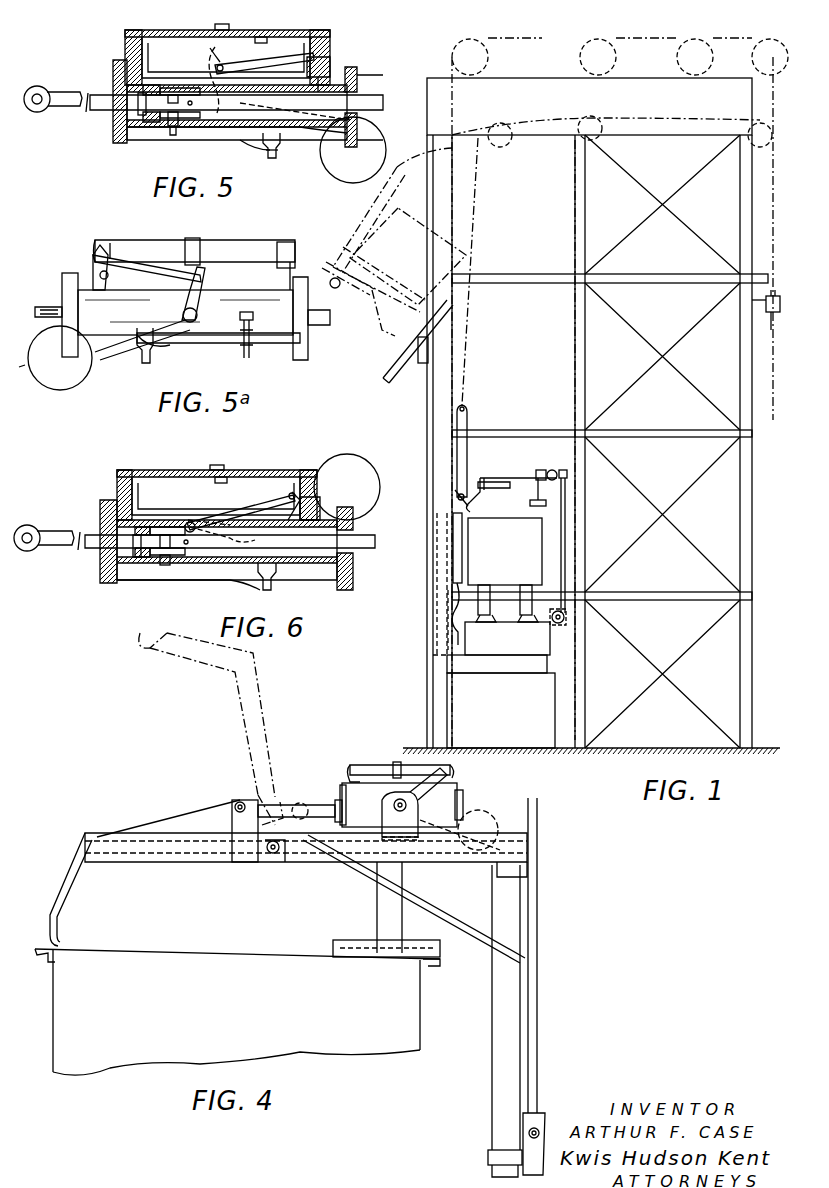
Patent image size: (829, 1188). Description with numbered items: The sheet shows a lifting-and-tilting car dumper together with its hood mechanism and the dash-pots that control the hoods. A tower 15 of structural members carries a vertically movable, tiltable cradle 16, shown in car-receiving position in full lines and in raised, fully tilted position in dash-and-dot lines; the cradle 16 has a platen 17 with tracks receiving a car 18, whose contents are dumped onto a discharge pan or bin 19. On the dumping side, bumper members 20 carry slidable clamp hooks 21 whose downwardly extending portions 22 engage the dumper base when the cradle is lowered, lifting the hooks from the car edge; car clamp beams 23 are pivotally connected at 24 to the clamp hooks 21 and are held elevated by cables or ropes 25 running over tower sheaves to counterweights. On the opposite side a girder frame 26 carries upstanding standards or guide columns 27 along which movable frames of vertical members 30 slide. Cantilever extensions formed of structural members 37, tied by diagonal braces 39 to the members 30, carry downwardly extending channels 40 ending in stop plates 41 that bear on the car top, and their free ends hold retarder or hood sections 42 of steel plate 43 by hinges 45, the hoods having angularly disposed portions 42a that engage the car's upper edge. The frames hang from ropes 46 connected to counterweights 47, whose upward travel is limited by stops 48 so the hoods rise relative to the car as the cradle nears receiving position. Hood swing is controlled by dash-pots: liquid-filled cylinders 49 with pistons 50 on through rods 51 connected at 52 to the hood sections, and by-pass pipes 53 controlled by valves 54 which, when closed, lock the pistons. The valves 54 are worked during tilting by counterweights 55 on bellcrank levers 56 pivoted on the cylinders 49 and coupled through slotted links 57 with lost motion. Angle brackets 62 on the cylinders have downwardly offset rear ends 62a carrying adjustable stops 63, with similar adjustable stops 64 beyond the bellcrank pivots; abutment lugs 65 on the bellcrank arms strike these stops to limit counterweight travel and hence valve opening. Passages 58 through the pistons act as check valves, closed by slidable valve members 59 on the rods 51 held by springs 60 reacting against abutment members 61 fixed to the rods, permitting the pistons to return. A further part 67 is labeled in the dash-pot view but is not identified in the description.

In FIG. 1, the tower 15 is at (585, 355).
In FIG. 1, the cradle 16 is at (494, 660).
In FIG. 1, the platen 17 is at (515, 622).
In FIG. 1, the car 18 is at (437, 366).
In FIG. 4, the car 18 is at (237, 1012).
In FIG. 1, the discharge pan or bin 19 is at (395, 370).
In FIG. 1, the bumper members 20 is at (462, 548).
In FIG. 1, the clamp hooks 21 is at (465, 494).
In FIG. 1, the downwardly extending portions 22 is at (465, 616).
In FIG. 1, the car clamp beams 23 is at (464, 447).
In FIG. 1, the pivotal connection 24 is at (455, 496).
In FIG. 1, the cables or ropes 25 is at (470, 350).
In FIG. 1, the girder frame 26 is at (564, 623).
In FIG. 1, the standards or guide columns 27 is at (566, 575).
In FIG. 4, the vertically extending members 30 is at (492, 1035).
In FIG. 4, the structural members 37 is at (450, 857).
In FIG. 4, the diagonal braces 39 is at (445, 915).
In FIG. 4, the downwardly extending channels 40 is at (377, 912).
In FIG. 1, the stop plates 41 is at (540, 506).
In FIG. 4, the stop plates 41 is at (415, 950).
In FIG. 1, the retarder or hood sections 42 is at (488, 488).
In FIG. 4, the retarder or hood sections 42 is at (262, 735).
In FIG. 1, the angularly disposed portions 42a is at (473, 508).
In FIG. 4, the angularly disposed portions 42a is at (68, 876).
In FIG. 4, the steel plate 43 is at (137, 862).
In FIG. 4, the hinges 45 is at (270, 855).
In FIG. 1, the ropes 46 is at (572, 344).
In FIG. 4, the ropes 46 is at (540, 1035).
In FIG. 1, the counterweights 47 is at (760, 318).
In FIG. 1, the stops 48 is at (773, 296).
In FIG. 1, the cylinders 49 is at (342, 284).
In FIG. 5, the cylinders 49 is at (207, 140).
In FIG. 5a, the cylinders 49 is at (90, 295).
In FIG. 6, the cylinders 49 is at (312, 572).
In FIG. 4, the cylinders 49 is at (440, 790).
In FIG. 5, the pistons 50 is at (150, 127).
In FIG. 6, the pistons 50 is at (142, 565).
In FIG. 5, the through rods 51 is at (290, 104).
In FIG. 6, the through rods 51 is at (287, 546).
In FIG. 4, the through rods 51 is at (325, 800).
In FIG. 4, the rod connection 52 is at (238, 800).
In FIG. 5, the pipes 53 is at (250, 45).
In FIG. 5a, the pipes 53 is at (250, 252).
In FIG. 6, the pipes 53 is at (178, 483).
In FIG. 4, the pipes 53 is at (375, 770).
In FIG. 5, the valves 54 is at (332, 66).
In FIG. 6, the valves 54 is at (316, 502).
In FIG. 1, the counterweights 55 is at (553, 470).
In FIG. 5, the counterweights 55 is at (318, 135).
In FIG. 5a, the counterweights 55 is at (70, 385).
In FIG. 6, the counterweights 55 is at (345, 458).
In FIG. 4, the counterweights 55 is at (490, 818).
In FIG. 5, the bellcrank levers 56 is at (237, 130).
In FIG. 6, the bellcrank levers 56 is at (280, 510).
In FIG. 5, the links 57 is at (264, 60).
In FIG. 5a, the links 57 is at (135, 265).
In FIG. 6, the links 57 is at (245, 505).
In FIG. 5, the passages 58 is at (152, 86).
In FIG. 6, the passages 58 is at (143, 527).
In FIG. 5, the slidable valve members 59 is at (176, 90).
In FIG. 6, the slidable valve members 59 is at (165, 530).
In FIG. 6, the springs 60 is at (172, 565).
In FIG. 5, the abutment members 61 is at (180, 126).
In FIG. 6, the abutment members 61 is at (192, 522).
In FIG. 5, the angle brackets 62 is at (255, 150).
In FIG. 5a, the angle brackets 62 is at (282, 343).
In FIG. 6, the angularly offset rear ends 62a is at (250, 595).
In FIG. 5a, the adjustable stops 63 is at (138, 345).
In FIG. 6, the adjustable stops 63 is at (276, 578).
In FIG. 5a, the adjustable stops 64 is at (252, 340).
In FIG. 5, the abutment lugs 65 is at (210, 48).
In FIG. 5a, the abutment lugs 65 is at (175, 290).
In FIG. 5, the pin 67 is at (258, 71).